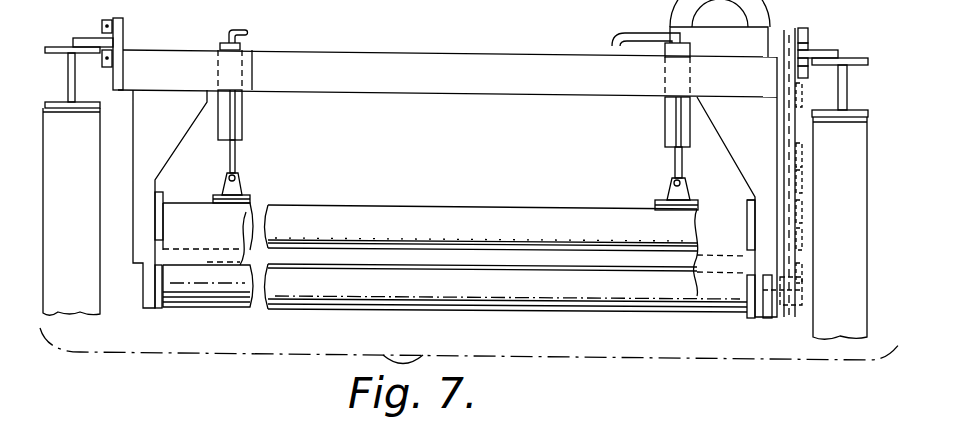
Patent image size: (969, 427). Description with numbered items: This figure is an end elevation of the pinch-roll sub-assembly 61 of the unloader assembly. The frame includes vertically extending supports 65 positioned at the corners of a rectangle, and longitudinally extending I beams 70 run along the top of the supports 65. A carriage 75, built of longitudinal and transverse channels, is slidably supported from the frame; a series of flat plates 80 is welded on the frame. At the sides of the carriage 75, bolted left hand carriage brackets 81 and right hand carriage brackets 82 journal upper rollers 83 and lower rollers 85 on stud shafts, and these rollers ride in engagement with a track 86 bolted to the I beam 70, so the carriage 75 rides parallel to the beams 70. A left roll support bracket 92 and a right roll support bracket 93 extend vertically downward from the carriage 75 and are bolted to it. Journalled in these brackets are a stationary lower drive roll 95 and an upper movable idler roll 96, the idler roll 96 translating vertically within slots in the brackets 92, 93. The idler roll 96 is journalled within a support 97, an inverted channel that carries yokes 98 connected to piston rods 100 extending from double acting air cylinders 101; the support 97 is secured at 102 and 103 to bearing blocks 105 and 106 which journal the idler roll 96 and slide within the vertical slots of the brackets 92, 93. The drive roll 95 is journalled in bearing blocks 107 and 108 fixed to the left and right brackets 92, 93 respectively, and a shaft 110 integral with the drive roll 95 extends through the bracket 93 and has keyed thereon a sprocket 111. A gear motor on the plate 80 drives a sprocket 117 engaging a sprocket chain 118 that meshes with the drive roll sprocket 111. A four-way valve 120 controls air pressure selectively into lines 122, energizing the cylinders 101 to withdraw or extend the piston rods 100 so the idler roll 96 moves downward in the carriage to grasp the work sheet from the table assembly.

The pinch-roll sub-assembly 61 is at (492, 48).
The vertically extending supports 65 is at (455, 223).
The longitudinally extending I beams 70 is at (70, 82).
The carriage 75 is at (481, 85).
The flat plates 80 is at (85, 38).
The left hand carriage brackets 81 is at (123, 40).
The right hand carriage brackets 82 is at (784, 72).
The upper rollers 83 is at (110, 20).
The lower rollers 85 is at (108, 68).
The track 86 is at (822, 50).
The left roll support bracket 92 is at (170, 199).
The right roll support bracket 93 is at (737, 187).
The lower drive roll 95 is at (333, 285).
The upper movable idler roll 96 is at (415, 212).
The support 97 is at (208, 234).
The yokes 98 is at (240, 187).
The piston rods 100 is at (235, 152).
The double acting air cylinders 101 is at (230, 107).
The securing point 102 is at (160, 206).
The securing point 103 is at (748, 210).
The bearing block 105 is at (155, 232).
The bearing block 106 is at (748, 222).
The bearing block 107 is at (164, 310).
The bearing block 108 is at (750, 316).
The shaft 110 is at (768, 310).
The sprocket 111 is at (795, 292).
The sprocket 117 is at (792, 36).
The sprocket chain 118 is at (803, 183).
The four-way valve 120 is at (772, 38).
The lines 122 is at (245, 32).